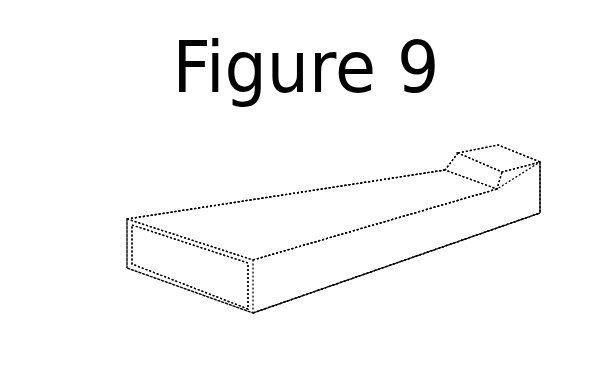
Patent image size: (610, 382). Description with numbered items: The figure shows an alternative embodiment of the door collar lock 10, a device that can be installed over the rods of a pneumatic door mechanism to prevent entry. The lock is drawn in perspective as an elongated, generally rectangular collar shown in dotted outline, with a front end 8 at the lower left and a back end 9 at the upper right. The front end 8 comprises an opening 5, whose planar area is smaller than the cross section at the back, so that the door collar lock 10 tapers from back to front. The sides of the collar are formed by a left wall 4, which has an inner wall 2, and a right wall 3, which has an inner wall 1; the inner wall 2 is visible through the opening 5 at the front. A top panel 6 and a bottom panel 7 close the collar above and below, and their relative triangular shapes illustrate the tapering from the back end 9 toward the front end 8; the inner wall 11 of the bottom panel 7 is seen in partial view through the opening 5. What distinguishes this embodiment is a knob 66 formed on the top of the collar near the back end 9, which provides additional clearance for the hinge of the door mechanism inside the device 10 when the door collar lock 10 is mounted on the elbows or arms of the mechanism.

The inner wall 1 is at (246, 285).
The inner wall 2 is at (153, 256).
The right wall 3 is at (358, 263).
The left wall 4 is at (162, 204).
The opening 5 is at (158, 263).
The top panel 6 is at (338, 223).
The bottom panel 7 is at (397, 268).
The front end 8 is at (163, 289).
The back end 9 is at (552, 181).
The door collar lock 10 is at (467, 275).
The inner wall 11 is at (203, 281).
The knob 66 is at (497, 158).